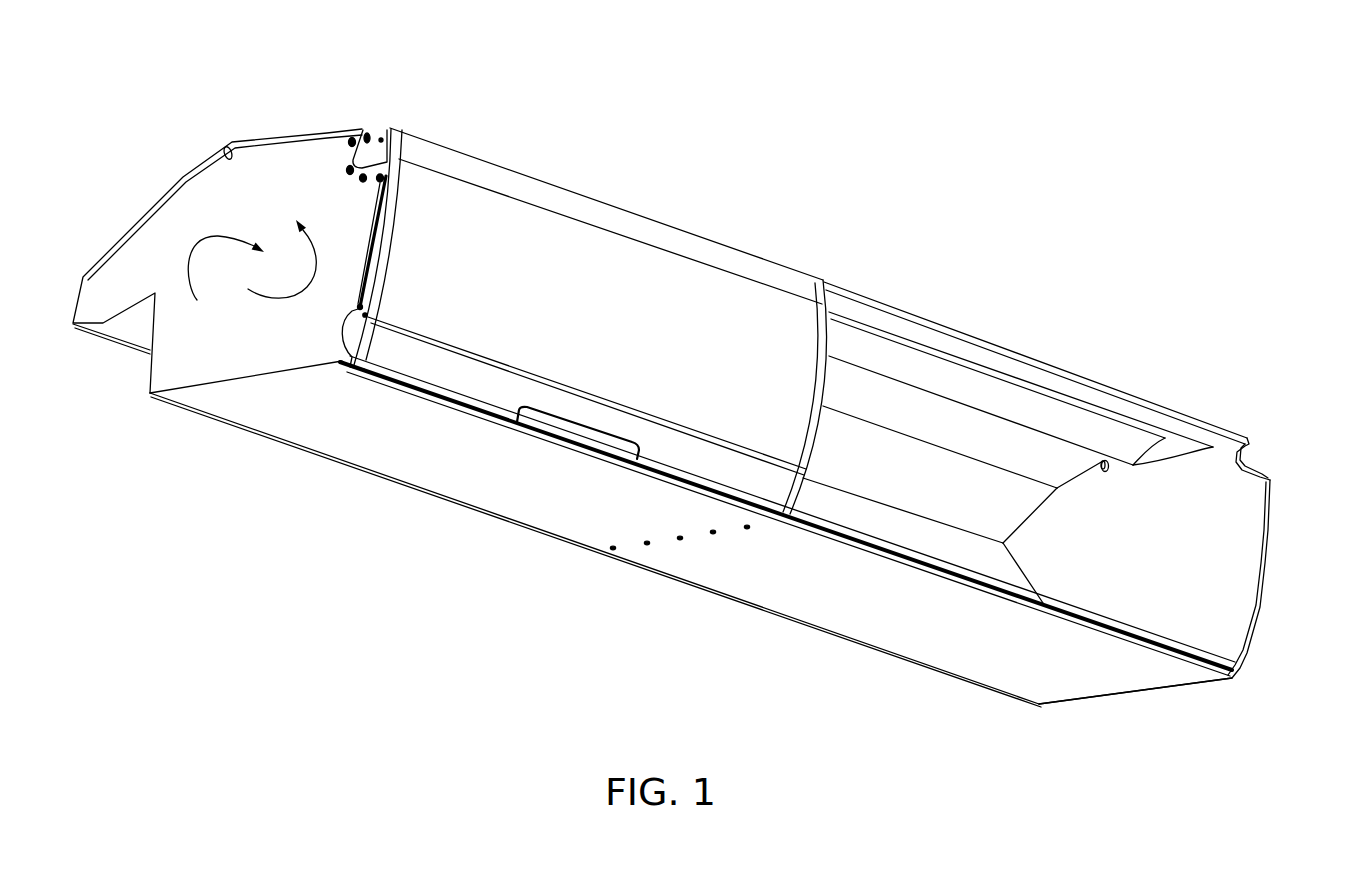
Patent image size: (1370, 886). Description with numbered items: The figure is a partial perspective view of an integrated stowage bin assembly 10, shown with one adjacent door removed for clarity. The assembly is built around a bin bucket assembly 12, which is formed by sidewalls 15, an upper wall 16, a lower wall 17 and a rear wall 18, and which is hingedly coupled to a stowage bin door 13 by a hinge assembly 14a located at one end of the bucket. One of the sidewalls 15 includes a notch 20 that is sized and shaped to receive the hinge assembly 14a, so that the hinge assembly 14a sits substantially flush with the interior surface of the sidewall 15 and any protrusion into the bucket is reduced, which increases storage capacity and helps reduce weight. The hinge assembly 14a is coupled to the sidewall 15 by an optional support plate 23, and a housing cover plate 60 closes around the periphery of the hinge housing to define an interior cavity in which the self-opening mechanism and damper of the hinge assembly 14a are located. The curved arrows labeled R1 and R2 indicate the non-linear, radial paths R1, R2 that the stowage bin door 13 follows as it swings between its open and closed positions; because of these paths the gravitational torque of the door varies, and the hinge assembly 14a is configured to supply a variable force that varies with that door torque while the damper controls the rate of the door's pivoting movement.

The integrated stowage bin assembly 10 is at (1297, 613).
The bin bucket assembly 12 is at (975, 664).
The stowage bin door 13 is at (451, 370).
The hinge assembly 14a is at (368, 116).
The sidewall 15 is at (247, 357).
The upper wall 16 is at (1010, 383).
The lower wall 17 is at (800, 592).
The rear wall 18 is at (888, 462).
The notch 20 is at (1264, 457).
The support plate 23 is at (353, 163).
The housing cover plate 60 is at (386, 133).
The radial path R1 is at (282, 276).
The radial path R2 is at (207, 268).